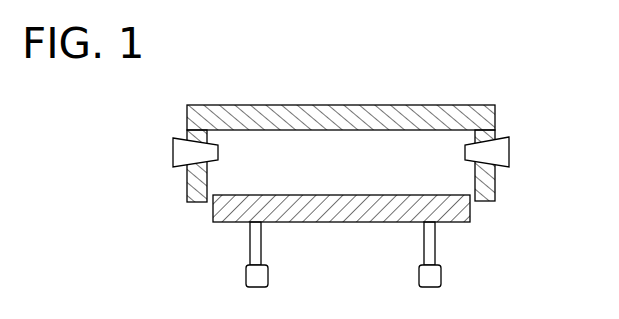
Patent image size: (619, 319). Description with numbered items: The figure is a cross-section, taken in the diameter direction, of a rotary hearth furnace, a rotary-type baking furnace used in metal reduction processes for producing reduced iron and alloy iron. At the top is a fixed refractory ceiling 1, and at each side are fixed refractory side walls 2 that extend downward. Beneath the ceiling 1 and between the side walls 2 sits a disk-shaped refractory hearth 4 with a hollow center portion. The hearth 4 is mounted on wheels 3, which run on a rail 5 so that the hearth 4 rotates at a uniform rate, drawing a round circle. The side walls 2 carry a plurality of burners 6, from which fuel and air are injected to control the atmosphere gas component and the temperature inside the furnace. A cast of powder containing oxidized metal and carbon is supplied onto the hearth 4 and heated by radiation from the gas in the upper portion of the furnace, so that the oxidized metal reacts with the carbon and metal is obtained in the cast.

The refractory ceiling 1 is at (403, 108).
The side walls 2 is at (490, 137).
The wheels 3 is at (250, 237).
The refractory hearth 4 is at (375, 222).
The rail 5 is at (248, 277).
The burners 6 is at (503, 152).